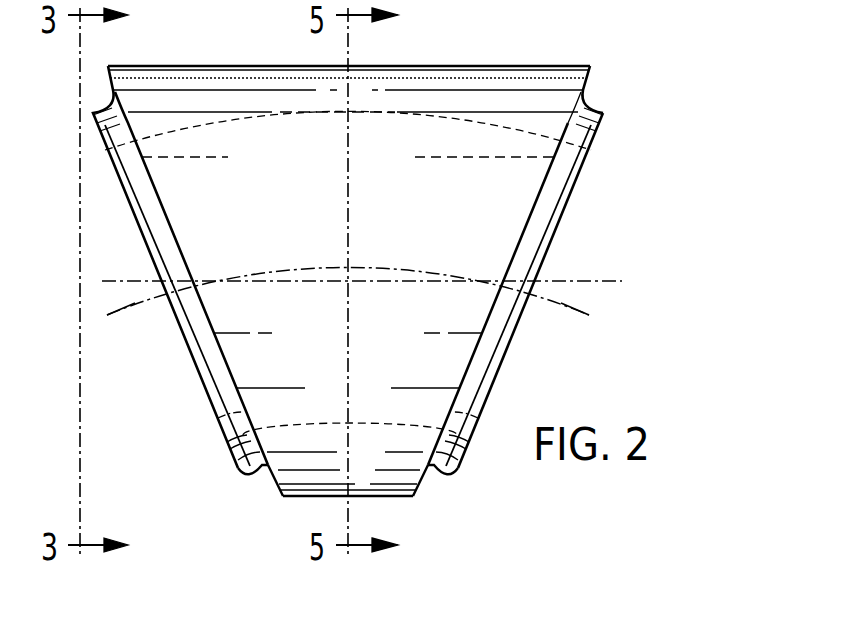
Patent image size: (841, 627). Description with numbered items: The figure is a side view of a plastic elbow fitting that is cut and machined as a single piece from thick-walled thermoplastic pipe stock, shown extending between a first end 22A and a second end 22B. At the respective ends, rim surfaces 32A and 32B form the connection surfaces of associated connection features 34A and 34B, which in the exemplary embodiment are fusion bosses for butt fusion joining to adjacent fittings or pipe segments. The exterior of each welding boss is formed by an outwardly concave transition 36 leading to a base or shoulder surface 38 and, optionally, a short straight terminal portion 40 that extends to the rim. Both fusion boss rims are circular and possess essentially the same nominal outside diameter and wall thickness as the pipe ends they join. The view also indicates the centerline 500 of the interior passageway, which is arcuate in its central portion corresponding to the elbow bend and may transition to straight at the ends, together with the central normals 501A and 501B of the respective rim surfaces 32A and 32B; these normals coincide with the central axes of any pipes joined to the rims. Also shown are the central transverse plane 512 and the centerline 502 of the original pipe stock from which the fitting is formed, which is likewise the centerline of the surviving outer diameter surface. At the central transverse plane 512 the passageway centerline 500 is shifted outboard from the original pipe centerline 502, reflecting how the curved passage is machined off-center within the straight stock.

The first end 22A is at (185, 405).
The second end 22B is at (600, 212).
The rim surface 32A is at (213, 412).
The rim surface 32B is at (583, 162).
The connection feature 34A is at (255, 495).
The connection feature 34B is at (610, 106).
The outwardly concave transition 36 is at (430, 468).
The base or shoulder surface 38 is at (582, 97).
The short straight terminal portion 40 is at (448, 472).
The centerline 500 is at (385, 268).
The central normal 501A is at (120, 313).
The central normal 501B is at (577, 313).
The centerline of the original pipe stock 502 is at (615, 281).
The central transverse plane 512 is at (348, 172).